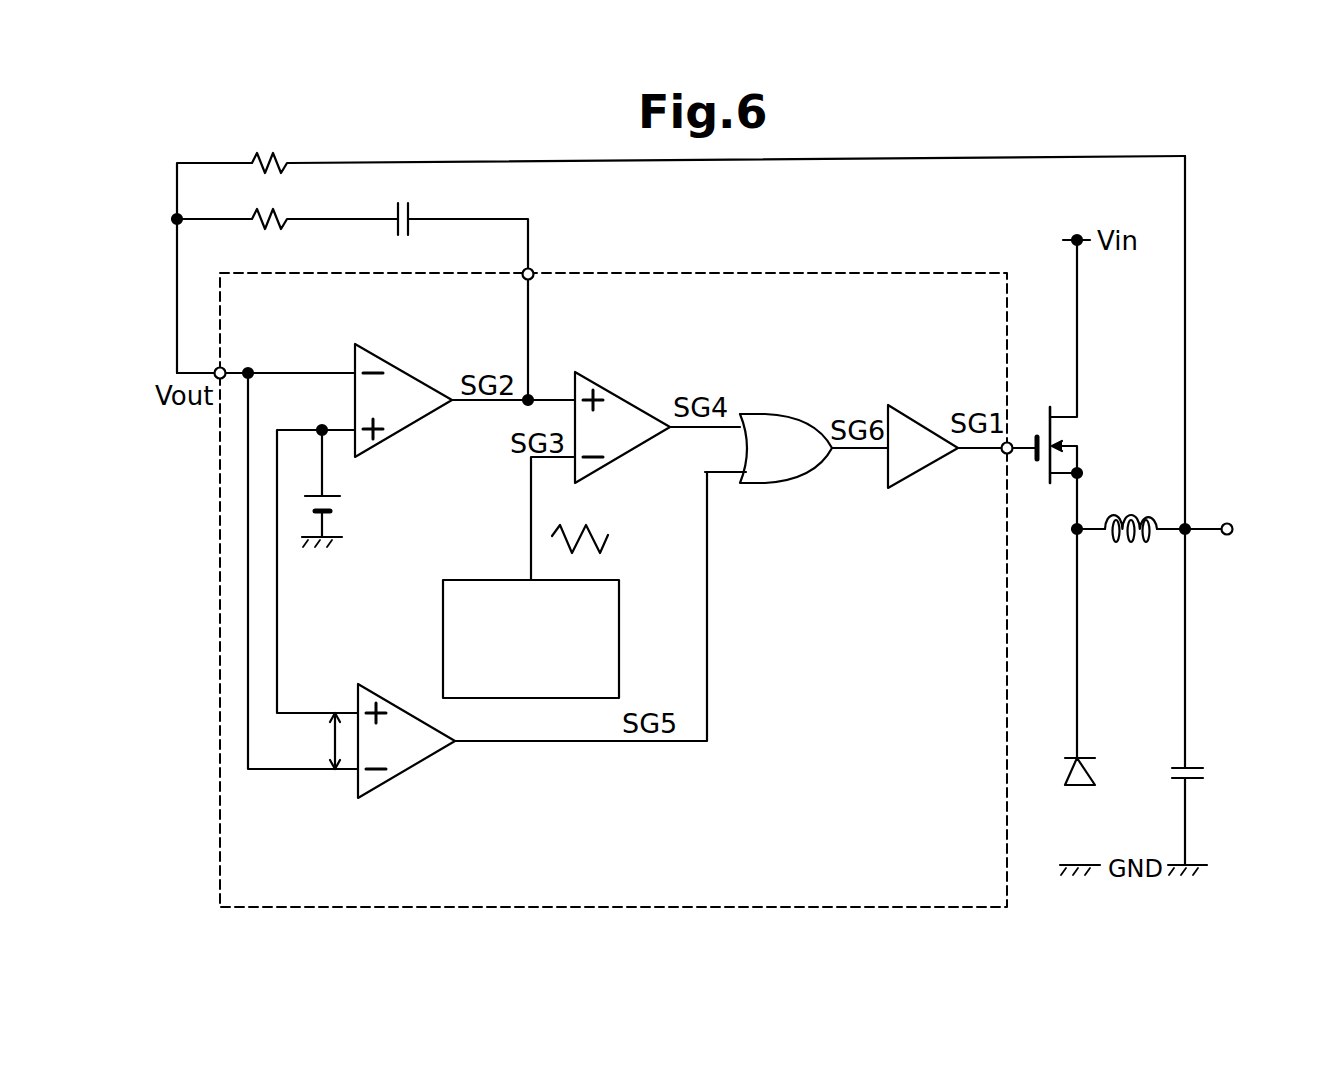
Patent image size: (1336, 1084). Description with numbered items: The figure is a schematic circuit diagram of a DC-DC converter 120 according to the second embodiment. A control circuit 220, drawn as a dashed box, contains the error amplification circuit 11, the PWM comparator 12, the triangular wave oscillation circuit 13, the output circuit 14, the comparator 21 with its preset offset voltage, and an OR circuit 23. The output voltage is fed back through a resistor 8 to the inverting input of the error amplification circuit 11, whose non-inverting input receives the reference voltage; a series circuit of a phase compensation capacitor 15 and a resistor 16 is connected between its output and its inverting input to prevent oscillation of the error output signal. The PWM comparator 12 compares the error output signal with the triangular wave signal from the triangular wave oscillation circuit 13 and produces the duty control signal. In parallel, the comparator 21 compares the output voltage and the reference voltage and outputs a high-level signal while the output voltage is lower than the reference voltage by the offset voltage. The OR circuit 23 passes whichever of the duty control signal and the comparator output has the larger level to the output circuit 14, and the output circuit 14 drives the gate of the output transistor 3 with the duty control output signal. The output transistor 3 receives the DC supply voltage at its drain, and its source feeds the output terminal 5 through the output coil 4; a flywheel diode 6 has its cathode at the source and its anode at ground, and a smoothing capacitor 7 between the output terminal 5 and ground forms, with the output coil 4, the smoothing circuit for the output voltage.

The resistor 8 is at (263, 160).
The resistor 16 is at (265, 216).
The phase compensation capacitor 15 is at (409, 212).
The control circuit 220 is at (863, 271).
The error amplification circuit 11 is at (407, 428).
The PWM comparator 12 is at (625, 397).
The triangular wave oscillation circuit 13 is at (621, 607).
The comparator 21 is at (413, 691).
The OR circuit 23 is at (800, 414).
The output circuit 14 is at (918, 473).
The output transistor 3 is at (1048, 422).
The output coil 4 is at (1138, 515).
The output terminal 5 is at (1227, 522).
The flywheel diode 6 is at (1095, 772).
The smoothing capacitor 7 is at (1200, 762).
The DC-DC converter 120 is at (1240, 882).